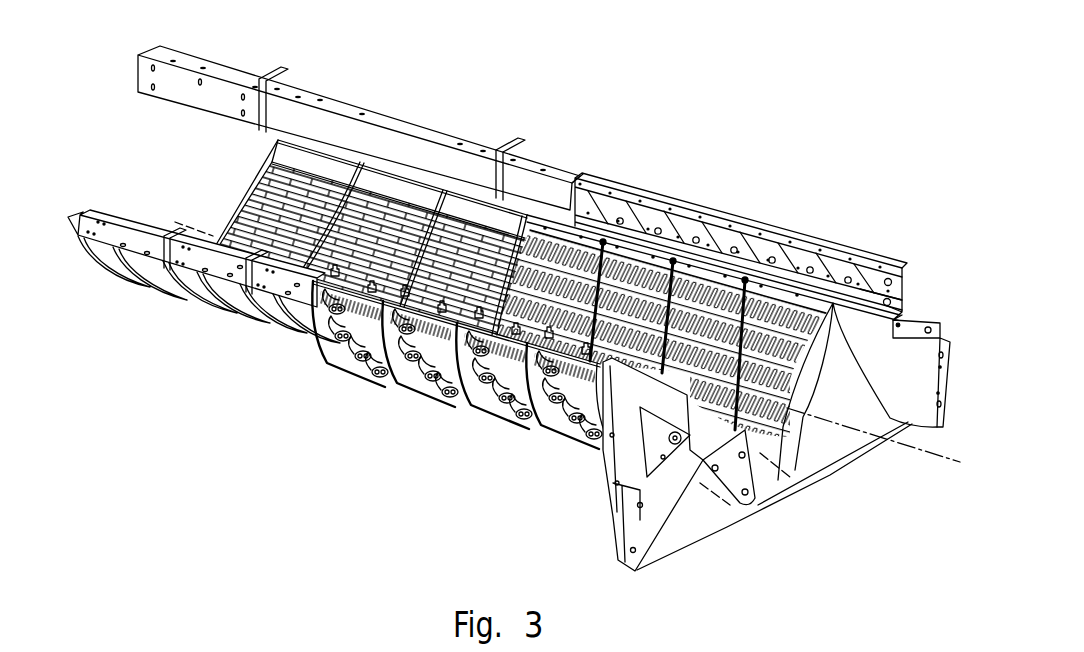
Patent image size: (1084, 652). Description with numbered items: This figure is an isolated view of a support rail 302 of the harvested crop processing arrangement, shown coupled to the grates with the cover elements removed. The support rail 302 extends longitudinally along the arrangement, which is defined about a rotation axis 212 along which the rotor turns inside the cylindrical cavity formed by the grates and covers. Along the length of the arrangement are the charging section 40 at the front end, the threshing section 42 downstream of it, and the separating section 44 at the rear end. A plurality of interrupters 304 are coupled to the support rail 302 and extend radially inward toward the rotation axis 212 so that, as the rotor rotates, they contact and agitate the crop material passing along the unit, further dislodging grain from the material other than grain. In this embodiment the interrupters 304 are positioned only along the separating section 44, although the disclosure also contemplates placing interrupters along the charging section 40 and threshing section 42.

The charging section 40 is at (173, 30).
The threshing section 42 is at (291, 341).
The separating section 44 is at (590, 464).
The support rail 302 is at (767, 233).
The interrupters 304 is at (886, 292).
The rotation axis 212 is at (940, 455).